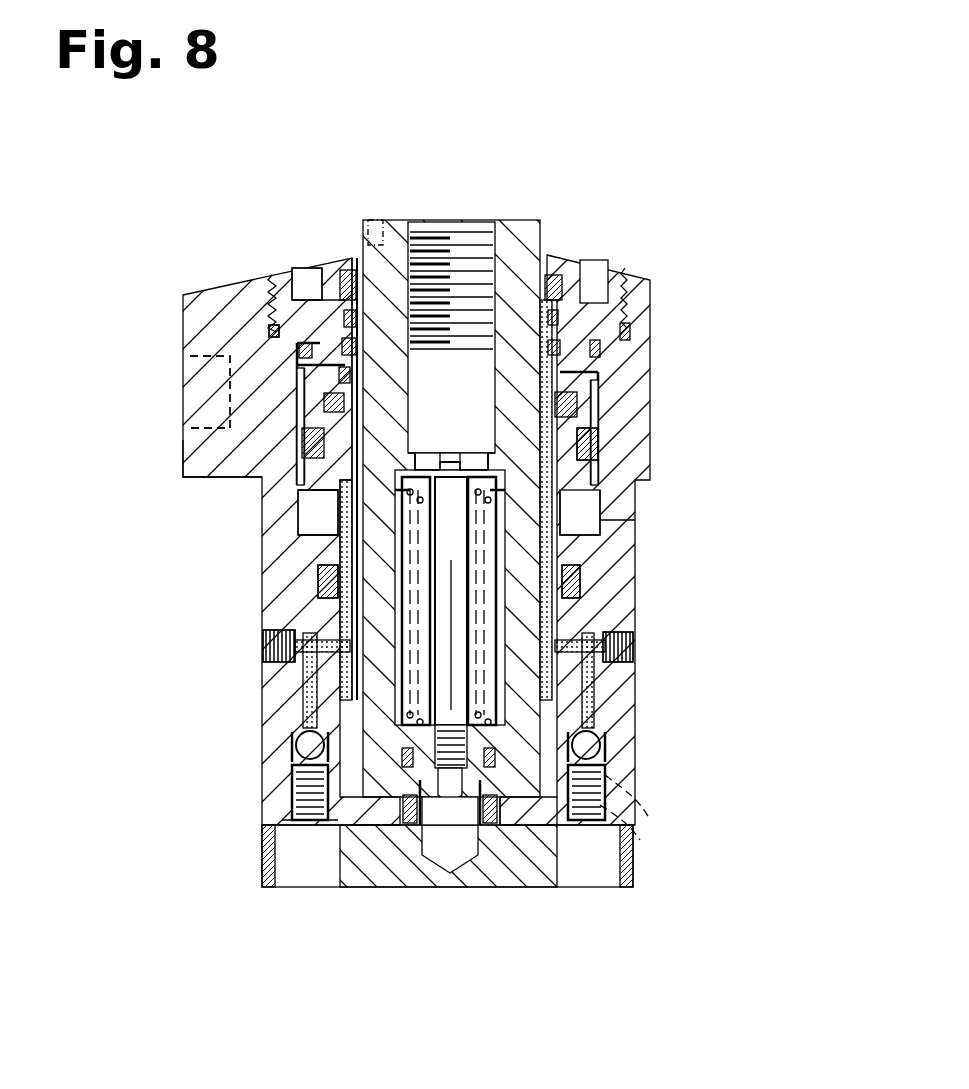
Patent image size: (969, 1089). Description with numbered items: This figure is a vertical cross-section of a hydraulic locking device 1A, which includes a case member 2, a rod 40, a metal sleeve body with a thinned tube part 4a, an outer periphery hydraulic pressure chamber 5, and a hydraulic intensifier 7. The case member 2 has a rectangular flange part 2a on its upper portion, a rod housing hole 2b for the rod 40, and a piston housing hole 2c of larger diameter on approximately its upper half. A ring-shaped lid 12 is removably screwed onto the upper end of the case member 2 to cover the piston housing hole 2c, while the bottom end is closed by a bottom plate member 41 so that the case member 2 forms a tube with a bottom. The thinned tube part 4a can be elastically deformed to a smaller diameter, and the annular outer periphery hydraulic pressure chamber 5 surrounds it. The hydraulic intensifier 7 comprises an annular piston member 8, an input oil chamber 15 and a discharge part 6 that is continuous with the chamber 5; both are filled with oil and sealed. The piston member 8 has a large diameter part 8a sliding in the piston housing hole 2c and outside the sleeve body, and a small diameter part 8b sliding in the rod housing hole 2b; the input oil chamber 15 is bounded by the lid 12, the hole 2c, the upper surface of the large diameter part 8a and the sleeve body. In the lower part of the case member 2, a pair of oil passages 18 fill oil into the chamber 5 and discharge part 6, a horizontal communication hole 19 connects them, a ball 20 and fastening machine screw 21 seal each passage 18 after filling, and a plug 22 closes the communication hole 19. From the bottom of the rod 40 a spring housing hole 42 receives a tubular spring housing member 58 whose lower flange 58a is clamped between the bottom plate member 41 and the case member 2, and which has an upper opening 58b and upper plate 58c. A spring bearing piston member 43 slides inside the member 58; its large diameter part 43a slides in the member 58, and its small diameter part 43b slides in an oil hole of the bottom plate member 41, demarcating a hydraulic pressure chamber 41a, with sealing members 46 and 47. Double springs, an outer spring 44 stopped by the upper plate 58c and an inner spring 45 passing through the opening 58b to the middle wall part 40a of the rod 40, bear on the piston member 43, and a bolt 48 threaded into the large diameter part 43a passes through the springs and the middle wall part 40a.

The hydraulic locking device 1A is at (655, 195).
The case member 2 is at (678, 405).
The flange part 2a is at (180, 462).
The rod housing hole 2b is at (640, 390).
The piston housing hole 2c is at (600, 520).
The thinned tube part 4a is at (446, 479).
The outer periphery hydraulic pressure chamber 5 is at (325, 565).
The discharge part 6 is at (298, 642).
The hydraulic intensifier 7 is at (283, 418).
The piston member 8 is at (172, 475).
The large diameter part 8a is at (298, 495).
The small diameter part 8b is at (298, 530).
The lid 12 is at (312, 268).
The input oil chamber 15 is at (272, 328).
The oil passage 18 is at (296, 745).
The communication hole 19 is at (305, 680).
The ball 20 is at (290, 790).
The fastening machine screw 21 is at (300, 822).
The plug 22 is at (633, 645).
The rod 40 is at (520, 240).
The middle wall part 40a is at (598, 445).
The bottom plate member 41 is at (358, 890).
The hydraulic pressure chamber 41a is at (460, 875).
The spring housing hole 42 is at (580, 580).
The spring bearing piston member 43 is at (690, 955).
The large diameter part 43a is at (580, 830).
The small diameter part 43b is at (505, 830).
The outer spring 44 is at (610, 790).
The inner spring 45 is at (605, 830).
The sealing member 46 is at (320, 830).
The sealing member 47 is at (413, 830).
The bolt 48 is at (470, 640).
The spring housing member 58 is at (345, 630).
The flange 58a is at (440, 830).
The opening 58b is at (438, 468).
The upper plate 58c is at (600, 505).